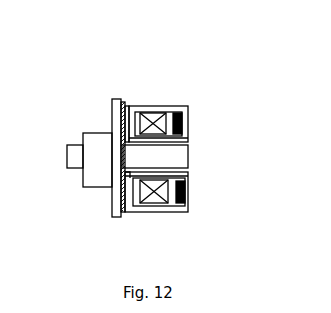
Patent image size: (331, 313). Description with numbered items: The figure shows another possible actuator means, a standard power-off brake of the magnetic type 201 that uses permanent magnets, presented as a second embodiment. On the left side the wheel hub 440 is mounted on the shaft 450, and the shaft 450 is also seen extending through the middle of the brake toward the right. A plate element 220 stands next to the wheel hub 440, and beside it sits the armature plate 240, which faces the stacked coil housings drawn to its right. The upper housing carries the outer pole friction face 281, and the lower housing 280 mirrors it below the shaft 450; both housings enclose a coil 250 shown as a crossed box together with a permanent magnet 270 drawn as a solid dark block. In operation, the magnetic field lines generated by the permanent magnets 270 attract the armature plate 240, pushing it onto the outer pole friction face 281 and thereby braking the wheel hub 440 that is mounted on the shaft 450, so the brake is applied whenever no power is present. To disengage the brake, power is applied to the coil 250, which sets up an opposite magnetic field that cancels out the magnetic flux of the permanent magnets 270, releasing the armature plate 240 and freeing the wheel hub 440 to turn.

The magnetic type power-off brake 201 is at (213, 70).
The mounting plate 220 is at (125, 213).
The armature plate 240 is at (130, 108).
The coil 250 is at (160, 108).
The permanent magnets 270 is at (188, 126).
The lower coil housing 280 is at (188, 177).
The outer pole friction face 281 is at (145, 108).
The wheel hub 440 is at (102, 132).
The shaft 450 is at (62, 152).